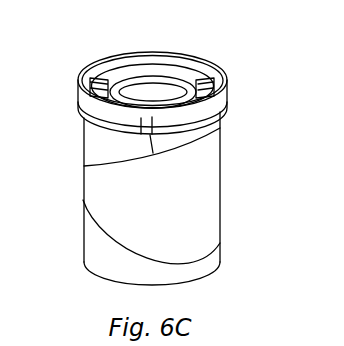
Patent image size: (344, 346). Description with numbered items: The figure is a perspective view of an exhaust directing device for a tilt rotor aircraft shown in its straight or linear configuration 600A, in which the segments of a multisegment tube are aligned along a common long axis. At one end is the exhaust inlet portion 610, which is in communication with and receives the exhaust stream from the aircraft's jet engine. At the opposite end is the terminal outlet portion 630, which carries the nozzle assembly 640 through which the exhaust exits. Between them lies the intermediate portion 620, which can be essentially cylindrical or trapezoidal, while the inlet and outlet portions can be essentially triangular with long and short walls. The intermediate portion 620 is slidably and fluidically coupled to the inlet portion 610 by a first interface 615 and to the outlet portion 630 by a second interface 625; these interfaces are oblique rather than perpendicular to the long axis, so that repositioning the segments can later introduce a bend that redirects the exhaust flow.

The straight configuration 600A is at (162, 163).
The nozzle assembly 640 is at (107, 60).
The second interface 625 is at (183, 78).
The outlet portion 630 is at (102, 138).
The intermediate portion 620 is at (168, 192).
The first interface 615 is at (118, 243).
The exhaust inlet portion 610 is at (140, 272).